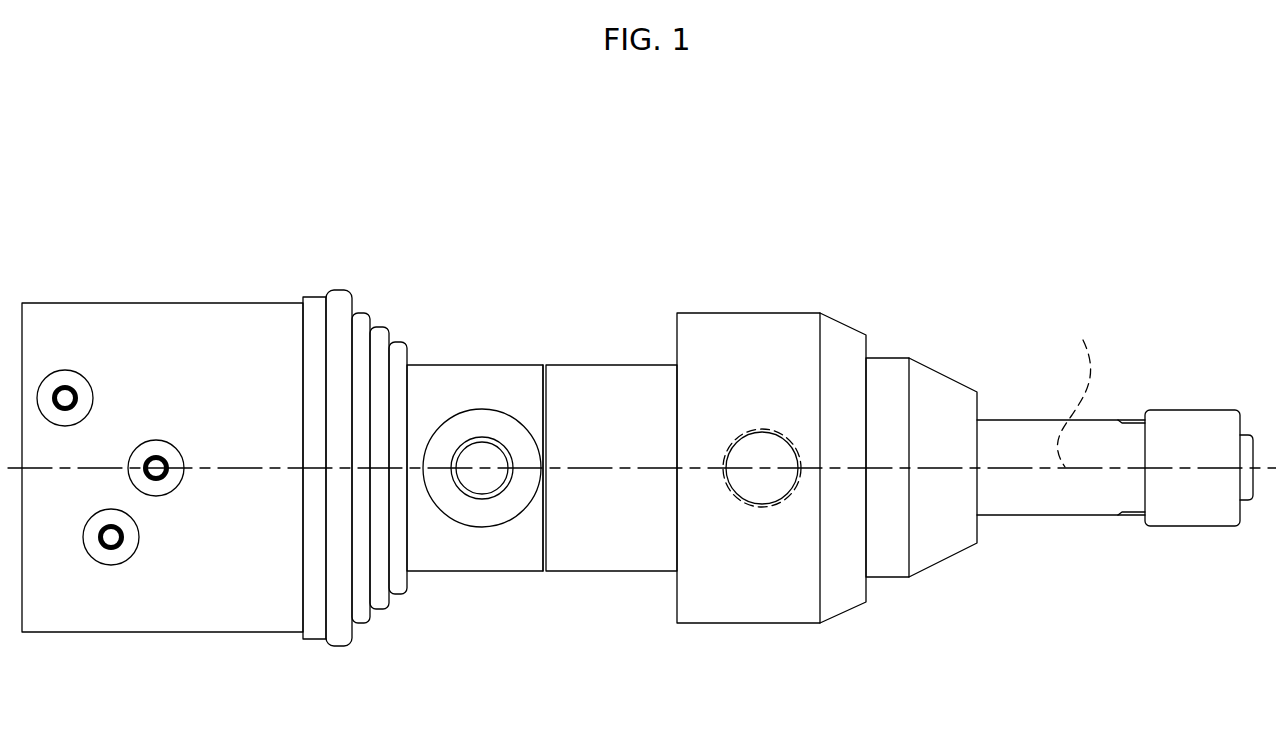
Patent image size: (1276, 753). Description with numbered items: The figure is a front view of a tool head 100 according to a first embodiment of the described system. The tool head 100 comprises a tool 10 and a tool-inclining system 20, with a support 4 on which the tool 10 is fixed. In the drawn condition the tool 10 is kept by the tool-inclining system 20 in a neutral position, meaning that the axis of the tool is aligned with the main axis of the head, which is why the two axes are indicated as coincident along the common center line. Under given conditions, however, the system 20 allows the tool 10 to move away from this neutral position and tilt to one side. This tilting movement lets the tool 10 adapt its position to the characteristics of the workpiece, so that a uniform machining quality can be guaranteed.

The tool head 100 is at (495, 263).
The tool-inclining system 20 is at (217, 635).
The support 4 is at (634, 372).
The tool 10 is at (837, 620).